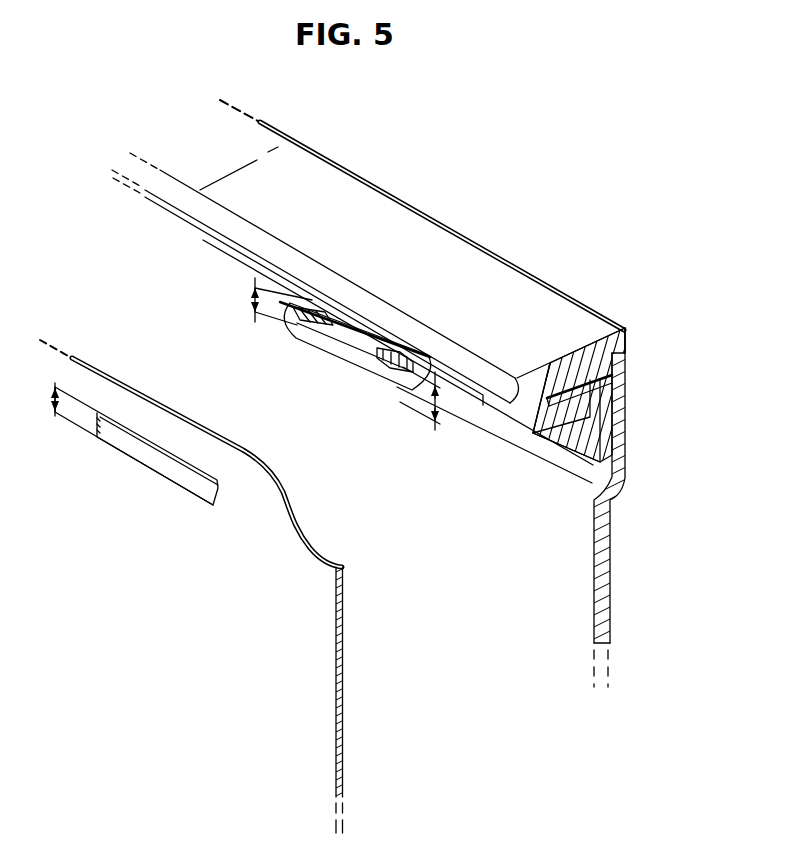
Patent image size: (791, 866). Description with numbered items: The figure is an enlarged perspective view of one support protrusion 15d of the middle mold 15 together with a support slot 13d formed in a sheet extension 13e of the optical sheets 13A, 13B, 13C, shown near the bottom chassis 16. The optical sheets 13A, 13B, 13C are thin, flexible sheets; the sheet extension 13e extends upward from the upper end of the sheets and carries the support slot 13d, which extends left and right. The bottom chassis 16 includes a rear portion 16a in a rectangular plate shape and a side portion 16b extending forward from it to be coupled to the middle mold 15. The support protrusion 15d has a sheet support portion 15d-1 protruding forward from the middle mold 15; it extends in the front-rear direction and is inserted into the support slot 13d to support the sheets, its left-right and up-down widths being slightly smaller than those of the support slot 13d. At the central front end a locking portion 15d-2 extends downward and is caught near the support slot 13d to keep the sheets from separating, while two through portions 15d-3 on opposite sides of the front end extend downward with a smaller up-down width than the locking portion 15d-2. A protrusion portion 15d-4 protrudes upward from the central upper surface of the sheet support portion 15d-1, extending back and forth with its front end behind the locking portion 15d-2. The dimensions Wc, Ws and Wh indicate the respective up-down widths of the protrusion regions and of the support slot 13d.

The middle mold 15 is at (389, 191).
The support protrusion 15d is at (351, 355).
The sheet support portion 15d-1 is at (428, 367).
The locking portion 15d-2 is at (342, 358).
The through portion 15d-3 is at (298, 327).
The protrusion portion 15d-4 is at (353, 336).
The bottom chassis 16 is at (607, 479).
The rear portion 16a is at (608, 583).
The side portion 16b is at (582, 323).
The diffuser sheet 13A is at (281, 586).
The dual brightness enhancement film sheet 13B is at (281, 586).
The quantum dot sheet 13C is at (281, 586).
The support slot 13d is at (157, 470).
The sheet extension 13e is at (170, 430).
The hook width Wc is at (264, 301).
The slot width Ws is at (452, 401).
The hole height Wh is at (35, 399).